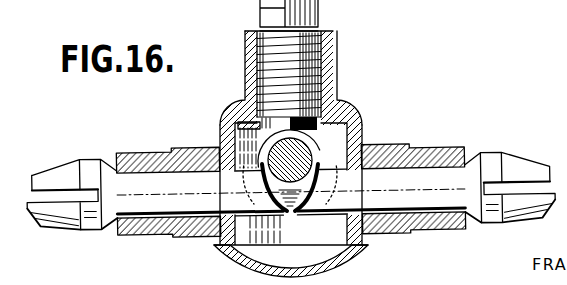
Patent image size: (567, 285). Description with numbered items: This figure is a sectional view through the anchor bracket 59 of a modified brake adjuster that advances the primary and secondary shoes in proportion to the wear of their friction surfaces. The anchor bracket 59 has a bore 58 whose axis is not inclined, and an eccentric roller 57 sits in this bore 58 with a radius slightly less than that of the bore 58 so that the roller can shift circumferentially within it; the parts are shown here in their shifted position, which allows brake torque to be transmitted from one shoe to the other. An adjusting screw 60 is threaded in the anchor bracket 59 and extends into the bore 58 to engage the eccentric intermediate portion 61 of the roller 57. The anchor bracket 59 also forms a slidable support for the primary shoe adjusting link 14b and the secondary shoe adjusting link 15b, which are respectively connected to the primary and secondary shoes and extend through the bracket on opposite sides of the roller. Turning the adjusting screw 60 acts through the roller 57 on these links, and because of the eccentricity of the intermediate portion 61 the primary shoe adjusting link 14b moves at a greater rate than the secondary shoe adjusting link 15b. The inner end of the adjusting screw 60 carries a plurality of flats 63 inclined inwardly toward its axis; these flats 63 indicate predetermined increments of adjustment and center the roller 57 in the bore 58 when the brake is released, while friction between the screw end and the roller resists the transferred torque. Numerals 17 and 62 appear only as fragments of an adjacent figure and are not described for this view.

The primary shoe adjusting link 14b is at (205, 200).
The secondary shoe adjusting link 15b is at (420, 193).
The eccentric roller 57 is at (338, 135).
The bore 58 is at (338, 146).
The anchor bracket 59 is at (221, 131).
The adjusting screw 60 is at (328, 63).
The eccentric intermediate portion 61 is at (258, 122).
The flats 63 is at (300, 158).
The stem 17 is at (418, 8).
The handle 62 is at (391, 3).